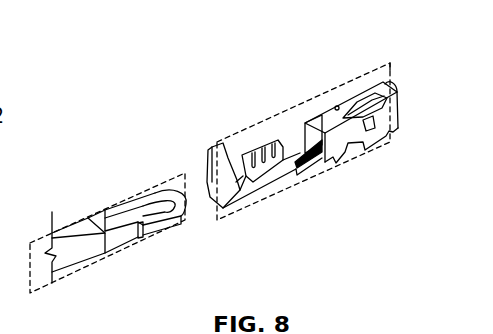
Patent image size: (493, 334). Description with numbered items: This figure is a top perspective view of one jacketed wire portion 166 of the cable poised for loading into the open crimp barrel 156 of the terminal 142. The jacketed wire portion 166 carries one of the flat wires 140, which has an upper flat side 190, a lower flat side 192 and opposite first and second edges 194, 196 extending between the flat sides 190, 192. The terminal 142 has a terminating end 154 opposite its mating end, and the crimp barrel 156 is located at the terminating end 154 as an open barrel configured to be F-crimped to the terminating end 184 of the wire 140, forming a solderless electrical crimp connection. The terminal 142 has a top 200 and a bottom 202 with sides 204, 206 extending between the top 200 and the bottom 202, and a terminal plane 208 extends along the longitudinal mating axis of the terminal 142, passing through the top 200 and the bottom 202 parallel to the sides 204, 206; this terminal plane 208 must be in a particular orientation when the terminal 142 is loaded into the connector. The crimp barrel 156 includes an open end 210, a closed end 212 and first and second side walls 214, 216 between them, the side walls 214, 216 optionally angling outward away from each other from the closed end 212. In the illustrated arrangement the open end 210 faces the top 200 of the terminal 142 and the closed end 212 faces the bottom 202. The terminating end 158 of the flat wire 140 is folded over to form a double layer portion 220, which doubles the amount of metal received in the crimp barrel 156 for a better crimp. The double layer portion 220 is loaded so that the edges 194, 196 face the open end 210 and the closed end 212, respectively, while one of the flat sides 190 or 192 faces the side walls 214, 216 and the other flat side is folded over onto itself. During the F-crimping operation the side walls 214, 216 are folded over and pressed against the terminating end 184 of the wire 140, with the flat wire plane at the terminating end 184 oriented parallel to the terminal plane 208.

The flat wire 140 is at (113, 228).
The terminal 142 is at (334, 86).
The terminating end 154 is at (250, 143).
The crimp barrel 156 is at (267, 181).
The terminating end 158 is at (1, 7).
The jacketed wire portion 166 is at (82, 202).
The terminating end 184 is at (150, 178).
The upper flat side 190 is at (163, 221).
The lower flat side 192 is at (145, 208).
The first edge 194 is at (105, 218).
The second edge 196 is at (152, 232).
The top 200 is at (383, 86).
The bottom 202 is at (357, 144).
The side 204 is at (354, 134).
The side 206 is at (303, 123).
The terminal plane 208 is at (402, 64).
The open end 210 is at (271, 136).
The closed end 212 is at (285, 176).
The first side wall 214 is at (287, 166).
The second side wall 216 is at (245, 154).
The double layer portion 220 is at (174, 178).